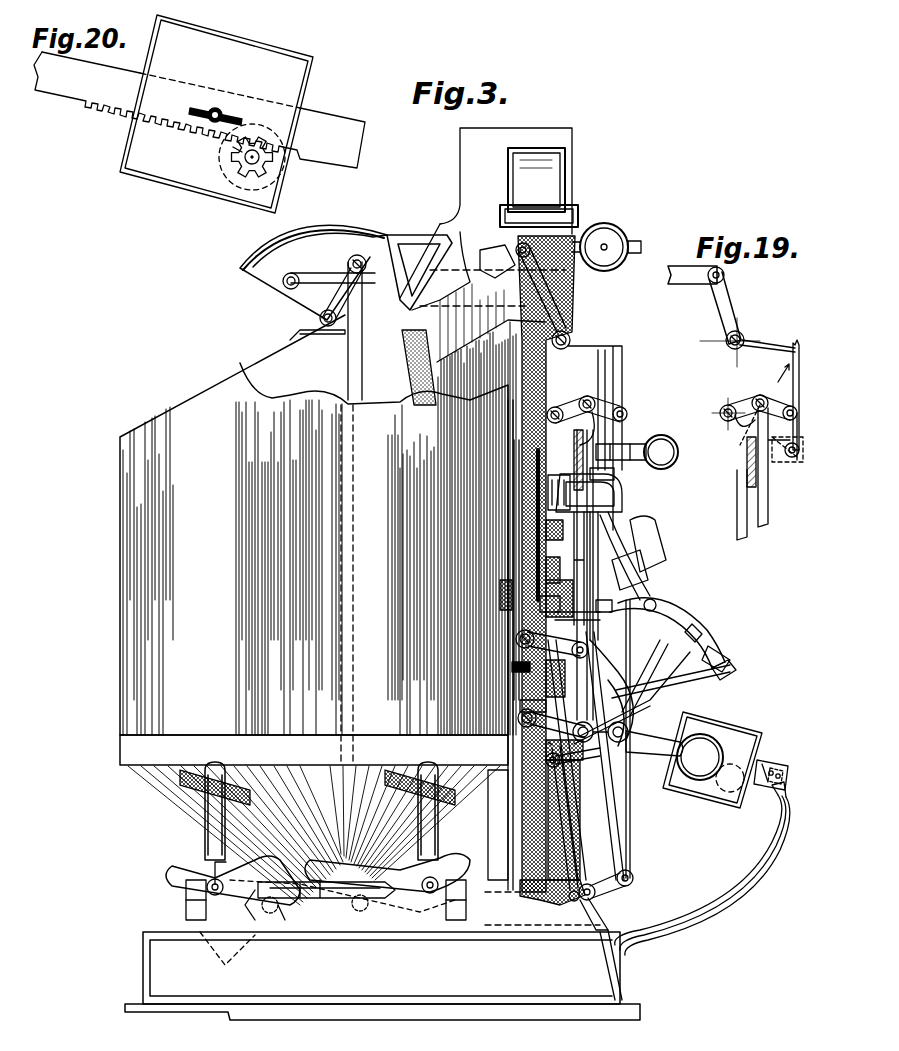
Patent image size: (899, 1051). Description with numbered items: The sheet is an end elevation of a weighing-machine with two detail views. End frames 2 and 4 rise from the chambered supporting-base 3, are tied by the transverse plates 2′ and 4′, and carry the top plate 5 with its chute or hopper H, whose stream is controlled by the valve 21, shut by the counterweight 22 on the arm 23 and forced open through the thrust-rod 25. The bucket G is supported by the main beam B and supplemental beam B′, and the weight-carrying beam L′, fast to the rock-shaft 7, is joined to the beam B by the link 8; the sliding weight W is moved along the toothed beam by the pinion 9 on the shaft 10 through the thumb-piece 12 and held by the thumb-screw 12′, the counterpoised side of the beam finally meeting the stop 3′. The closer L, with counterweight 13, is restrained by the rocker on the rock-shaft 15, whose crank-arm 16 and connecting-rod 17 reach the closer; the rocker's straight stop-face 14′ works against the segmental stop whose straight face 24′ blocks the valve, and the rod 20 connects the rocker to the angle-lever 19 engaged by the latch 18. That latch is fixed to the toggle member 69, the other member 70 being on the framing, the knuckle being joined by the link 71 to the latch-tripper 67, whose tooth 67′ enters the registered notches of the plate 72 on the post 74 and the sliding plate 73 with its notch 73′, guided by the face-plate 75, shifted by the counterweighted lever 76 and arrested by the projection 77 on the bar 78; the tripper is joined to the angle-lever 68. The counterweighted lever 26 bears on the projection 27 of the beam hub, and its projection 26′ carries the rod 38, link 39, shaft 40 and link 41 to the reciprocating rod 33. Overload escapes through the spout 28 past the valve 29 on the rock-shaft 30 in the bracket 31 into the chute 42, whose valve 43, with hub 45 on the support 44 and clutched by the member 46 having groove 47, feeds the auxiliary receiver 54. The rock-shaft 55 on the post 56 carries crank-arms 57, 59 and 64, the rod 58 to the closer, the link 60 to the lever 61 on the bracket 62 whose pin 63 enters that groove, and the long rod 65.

In FIG. 3, the chute or hopper H is at (574, 137).
In FIG. 3, the top plate 5 is at (548, 188).
In FIG. 3, the end frame 2 is at (500, 900).
In FIG. 3, the counterweight 22 is at (607, 238).
In FIG. 3, the arm 23 is at (640, 243).
In FIG. 3, the straight stop-face 14′ is at (276, 286).
In FIG. 19, the rod 20 is at (690, 276).
In FIG. 3, the rod 20 is at (318, 273).
In FIG. 3, the crank-arm 16 is at (346, 300).
In FIG. 3, the rock-shaft 15 is at (318, 318).
In FIG. 3, the connecting-rod 17 is at (362, 367).
In FIG. 3, the straight face 24′ is at (420, 236).
In FIG. 3, the valve 21 is at (482, 293).
In FIG. 3, the end frame 4 is at (562, 830).
In FIG. 19, the angle-lever 19 is at (740, 322).
In FIG. 3, the angle-lever 19 is at (558, 318).
In FIG. 3, the thrust-rod 25 is at (570, 340).
In FIG. 19, the toggle member 70 is at (748, 404).
In FIG. 3, the toggle member 70 is at (562, 406).
In FIG. 19, the toggle member 69 is at (778, 406).
In FIG. 3, the toggle member 69 is at (594, 400).
In FIG. 19, the link 71 is at (769, 503).
In FIG. 3, the link 71 is at (598, 410).
In FIG. 19, the latch 18 is at (799, 346).
In FIG. 3, the latch 18 is at (622, 410).
In FIG. 3, the link 39 is at (628, 412).
In FIG. 19, the transverse plate 2′ is at (746, 450).
In FIG. 3, the transverse plate 2′ is at (590, 462).
In FIG. 3, the link 41 is at (640, 440).
In FIG. 3, the shaft 40 is at (661, 452).
In FIG. 3, the rod or bar 38 is at (616, 476).
In FIG. 3, the bifurcated bracket 31 is at (600, 492).
In FIG. 3, the rock-shaft 30 is at (624, 500).
In FIG. 3, the spout 28 is at (588, 538).
In FIG. 3, the valve 29 is at (600, 548).
In FIG. 3, the projection 77 is at (642, 560).
In FIG. 3, the latch-tripper 67 is at (656, 530).
In FIG. 3, the tooth 67′ is at (650, 568).
In FIG. 3, the reciprocatory rod 33 is at (614, 606).
In FIG. 3, the counterweighted angle-lever 68 is at (513, 500).
In FIG. 3, the vertical bar 78 is at (512, 592).
In FIG. 3, the chute 42 is at (545, 604).
In FIG. 3, the valve-hub 45 is at (558, 618).
In FIG. 3, the pin 63 is at (518, 648).
In FIG. 3, the fixed support 44 is at (590, 650).
In FIG. 3, the auxiliary load-supply valve 43 is at (512, 668).
In FIG. 3, the transverse plate 4′ is at (548, 672).
In FIG. 3, the auxiliary load-receiver 54 is at (546, 706).
In FIG. 3, the projection 26′ is at (518, 724).
In FIG. 3, the sliding clutch member 46 is at (682, 615).
In FIG. 3, the peripheral groove 47 is at (640, 618).
In FIG. 3, the sliding plate 73 is at (702, 628).
In FIG. 3, the notch 73′ is at (710, 640).
In FIG. 3, the face-plate 75 is at (718, 650).
In FIG. 3, the counterweighted lever 76 is at (730, 664).
In FIG. 3, the plate 72 is at (736, 670).
In FIG. 3, the post 74 is at (664, 666).
In FIG. 3, the bracket 62 is at (645, 705).
In FIG. 3, the lever 61 is at (600, 754).
In FIG. 3, the rock-shaft 7 is at (628, 730).
In FIG. 3, the counterweighted lever 26 is at (676, 742).
In FIG. 20, the sliding weight W is at (216, 114).
In FIG. 3, the sliding weight W is at (736, 734).
In FIG. 20, the thumb-piece 12 is at (226, 172).
In FIG. 3, the thumb-piece 12 is at (732, 794).
In FIG. 20, the thumb-screw 12′ is at (228, 114).
In FIG. 20, the weight-carrying beam L′ is at (84, 88).
In FIG. 3, the weight-carrying beam L′ is at (780, 762).
In FIG. 3, the stop 3′ is at (786, 834).
In FIG. 3, the projection 27 is at (572, 778).
In FIG. 3, the upright link 60 is at (596, 812).
In FIG. 3, the rod 65 is at (634, 846).
In FIG. 3, the crank-arm 64 is at (632, 872).
In FIG. 3, the rock-shaft 55 is at (596, 892).
In FIG. 3, the post 56 is at (584, 902).
In FIG. 3, the crank-arm 57 is at (600, 916).
In FIG. 3, the second crank-arm 59 is at (560, 902).
In FIG. 3, the link 8 is at (520, 816).
In FIG. 3, the load-receiver G is at (318, 610).
In FIG. 3, the counterweight 13 is at (216, 922).
In FIG. 3, the rod 58 is at (432, 925).
In FIG. 3, the main beam B is at (318, 905).
In FIG. 3, the supplemental beam B′ is at (392, 880).
In FIG. 3, the closer L is at (372, 912).
In FIG. 3, the supporting-base 3 is at (382, 975).
In FIG. 20, the pinion 9 is at (247, 174).
In FIG. 20, the transverse shaft 10 is at (238, 156).